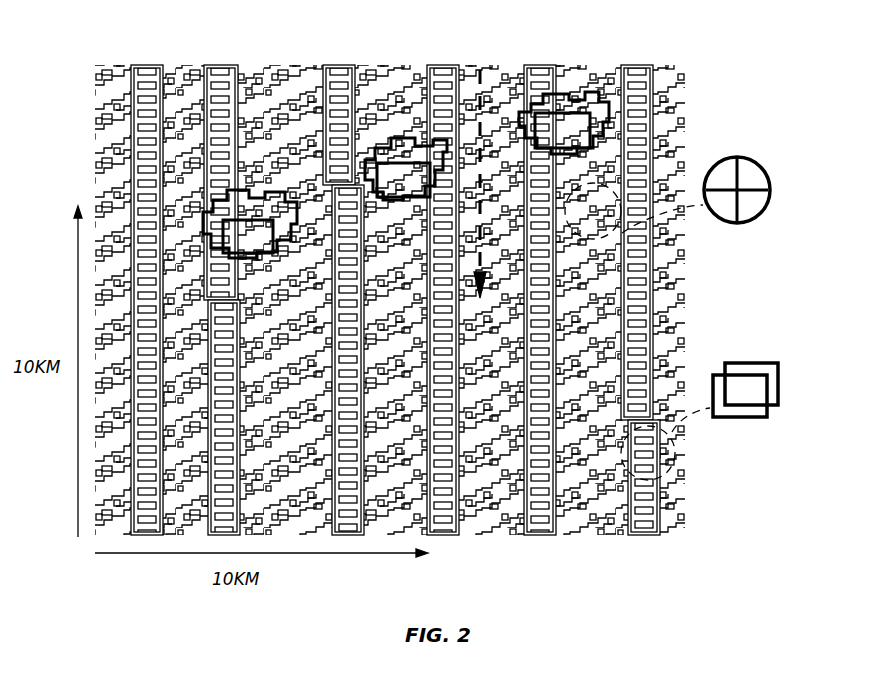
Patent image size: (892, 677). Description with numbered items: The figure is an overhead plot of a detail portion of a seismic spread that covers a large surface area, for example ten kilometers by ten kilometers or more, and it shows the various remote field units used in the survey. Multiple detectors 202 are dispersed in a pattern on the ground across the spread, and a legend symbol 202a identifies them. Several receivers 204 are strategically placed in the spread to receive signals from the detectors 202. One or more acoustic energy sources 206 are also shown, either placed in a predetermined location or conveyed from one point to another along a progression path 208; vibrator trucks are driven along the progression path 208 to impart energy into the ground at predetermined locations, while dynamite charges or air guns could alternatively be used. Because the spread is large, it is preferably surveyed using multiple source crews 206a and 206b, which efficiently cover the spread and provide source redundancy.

The detectors 202 is at (500, 345).
The detector symbol 202a is at (737, 156).
The receivers 204 is at (250, 190).
The acoustic energy sources 206 is at (670, 485).
The source crew 206a is at (737, 417).
The source crew 206b is at (740, 363).
The progression path 208 is at (483, 105).